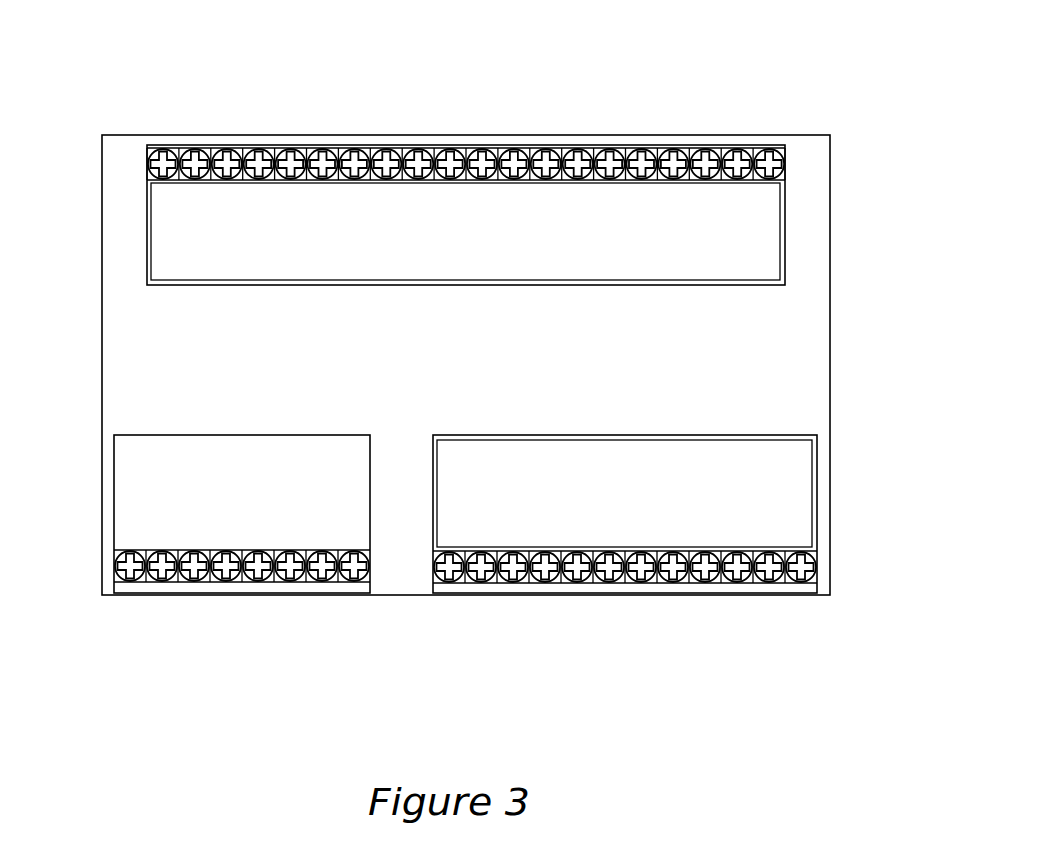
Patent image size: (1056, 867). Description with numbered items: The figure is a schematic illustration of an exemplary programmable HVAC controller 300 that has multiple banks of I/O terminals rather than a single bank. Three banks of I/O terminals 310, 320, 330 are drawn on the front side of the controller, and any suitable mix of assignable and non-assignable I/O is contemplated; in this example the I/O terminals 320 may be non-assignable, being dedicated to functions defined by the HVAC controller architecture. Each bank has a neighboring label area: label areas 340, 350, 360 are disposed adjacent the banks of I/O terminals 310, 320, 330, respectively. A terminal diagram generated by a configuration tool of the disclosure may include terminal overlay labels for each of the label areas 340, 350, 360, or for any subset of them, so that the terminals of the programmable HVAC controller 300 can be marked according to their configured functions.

The programmable HVAC controller 300 is at (906, 119).
The bank of I/O terminals 310 is at (783, 135).
The bank of I/O terminals 320 is at (370, 595).
The bank of I/O terminals 330 is at (817, 595).
The label area 340 is at (767, 259).
The label area 350 is at (114, 494).
The label area 360 is at (795, 535).